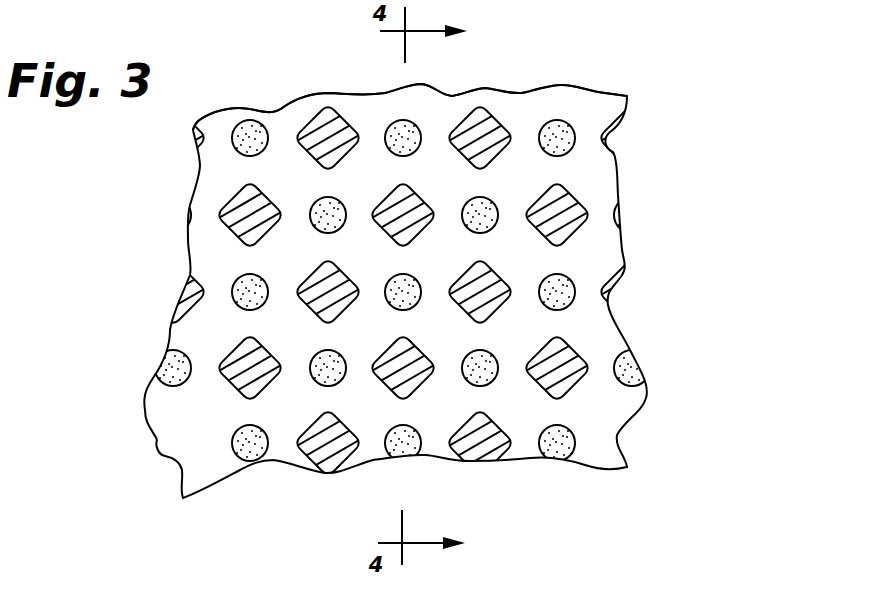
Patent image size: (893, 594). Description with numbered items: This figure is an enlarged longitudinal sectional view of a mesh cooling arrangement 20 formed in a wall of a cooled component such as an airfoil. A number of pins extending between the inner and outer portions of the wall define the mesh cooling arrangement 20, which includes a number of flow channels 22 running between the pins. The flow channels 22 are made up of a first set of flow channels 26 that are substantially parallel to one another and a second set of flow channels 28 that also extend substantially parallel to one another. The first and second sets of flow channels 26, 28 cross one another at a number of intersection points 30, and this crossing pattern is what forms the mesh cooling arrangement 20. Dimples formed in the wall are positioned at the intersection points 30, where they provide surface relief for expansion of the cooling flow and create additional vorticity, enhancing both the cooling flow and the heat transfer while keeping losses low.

The mesh cooling arrangement 20 is at (716, 56).
The flow channels 22 is at (277, 113).
The first set of flow channels 26 is at (292, 173).
The second set of flow channels 28 is at (368, 170).
The intersection points 30 is at (230, 315).